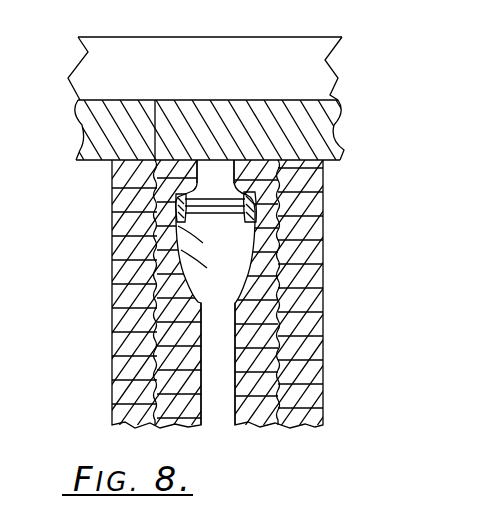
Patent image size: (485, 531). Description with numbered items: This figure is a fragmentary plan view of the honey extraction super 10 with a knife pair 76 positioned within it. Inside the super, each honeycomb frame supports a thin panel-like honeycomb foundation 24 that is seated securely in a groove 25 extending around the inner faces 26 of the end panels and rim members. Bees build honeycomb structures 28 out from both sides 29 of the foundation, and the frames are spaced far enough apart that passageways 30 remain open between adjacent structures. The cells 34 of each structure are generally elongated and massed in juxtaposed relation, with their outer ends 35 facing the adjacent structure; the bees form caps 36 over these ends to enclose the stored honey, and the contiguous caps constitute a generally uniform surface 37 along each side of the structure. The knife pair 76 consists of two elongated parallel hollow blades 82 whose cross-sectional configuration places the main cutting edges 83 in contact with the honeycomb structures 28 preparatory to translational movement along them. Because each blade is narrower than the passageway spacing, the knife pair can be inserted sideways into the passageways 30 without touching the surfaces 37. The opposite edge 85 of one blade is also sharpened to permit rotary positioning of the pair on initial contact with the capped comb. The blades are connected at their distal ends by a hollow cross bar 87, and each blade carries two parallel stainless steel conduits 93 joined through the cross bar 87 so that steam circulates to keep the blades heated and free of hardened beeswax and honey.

The honey extraction super-hive 10 is at (344, 26).
The honeycomb foundation 24 is at (323, 322).
The groove 25 is at (155, 100).
The inner faces 26 is at (82, 162).
The honeycomb structures 28 is at (334, 226).
The sides 29 is at (112, 420).
The passageways 30 is at (222, 405).
The cells 34 is at (328, 395).
The outer ends 35 is at (323, 295).
The caps 36 is at (112, 256).
The surface 37 is at (112, 370).
The knife pair 76 is at (325, 180).
The hollow blades 82 is at (252, 232).
The main cutting edges 83 is at (181, 250).
The opposite edge 85 is at (190, 192).
The hollow cross bar 87 is at (240, 212).
The conduit 93 is at (178, 216).